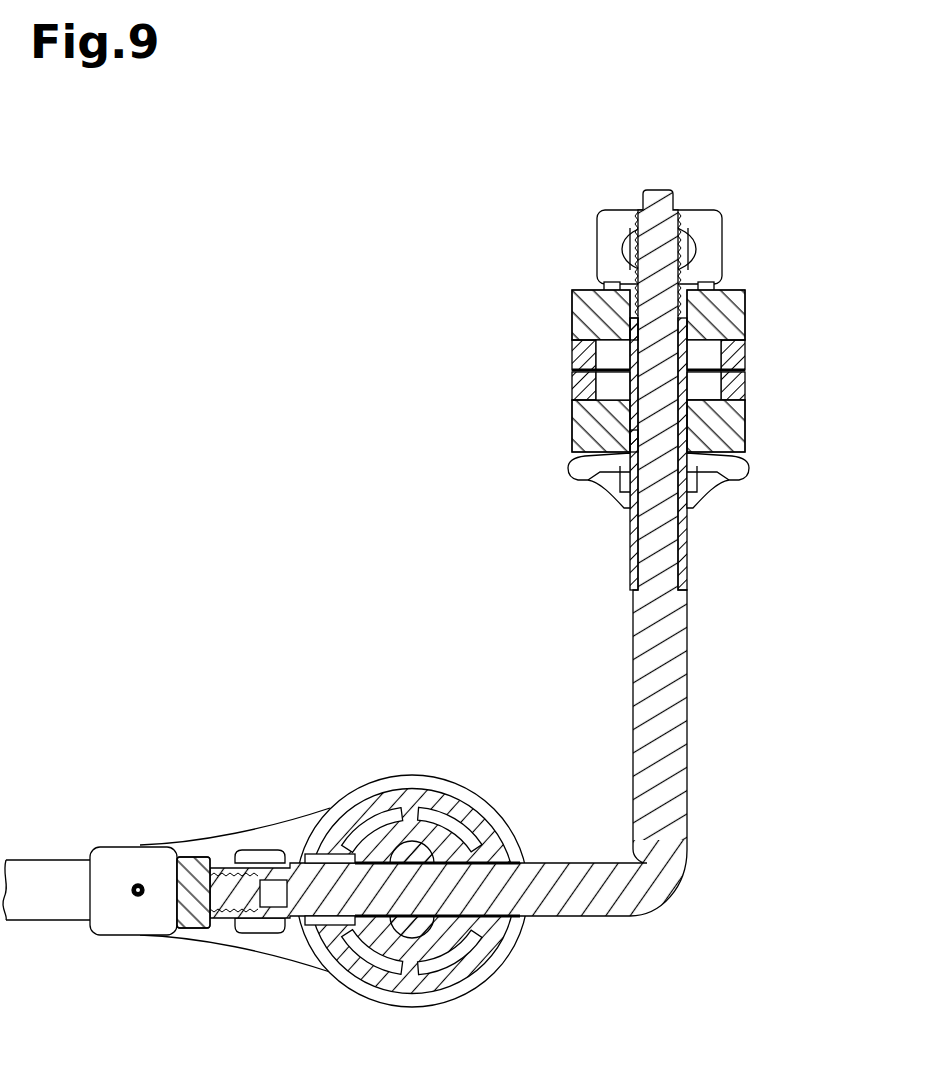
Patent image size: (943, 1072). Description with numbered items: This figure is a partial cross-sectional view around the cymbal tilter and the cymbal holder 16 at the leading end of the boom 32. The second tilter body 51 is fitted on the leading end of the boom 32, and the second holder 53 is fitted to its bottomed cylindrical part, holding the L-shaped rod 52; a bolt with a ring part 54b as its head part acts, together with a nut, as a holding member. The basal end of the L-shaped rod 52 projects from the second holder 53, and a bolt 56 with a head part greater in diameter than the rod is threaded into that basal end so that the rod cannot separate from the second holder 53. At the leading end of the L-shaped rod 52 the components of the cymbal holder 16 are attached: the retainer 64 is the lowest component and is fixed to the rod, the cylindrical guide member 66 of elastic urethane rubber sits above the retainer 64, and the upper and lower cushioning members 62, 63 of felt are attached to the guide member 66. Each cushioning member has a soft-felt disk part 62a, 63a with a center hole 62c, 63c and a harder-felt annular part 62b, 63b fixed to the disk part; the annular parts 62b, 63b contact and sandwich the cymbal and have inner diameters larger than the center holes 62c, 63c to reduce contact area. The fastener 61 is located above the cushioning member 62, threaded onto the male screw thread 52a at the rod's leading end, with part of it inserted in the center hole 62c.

The cymbal holder 16 is at (588, 178).
The boom 32 is at (48, 922).
The second tilter body 51 is at (266, 829).
The L-shaped rod 52 is at (661, 900).
The male screw thread 52a is at (681, 249).
The second holder 53 is at (421, 775).
The ring part 54b is at (478, 830).
The bolt 56 is at (178, 928).
The fastener 61 is at (718, 213).
The upper cushioning member 62 is at (746, 300).
The disk part 62a is at (570, 292).
The annular part 62b is at (570, 350).
The center hole 62c is at (636, 325).
The lower cushioning member 63 is at (746, 425).
The disk part 63a is at (570, 440).
The annular part 63b is at (570, 385).
The center hole 63c is at (636, 432).
The retainer 64 is at (740, 470).
The guide member 66 is at (690, 352).